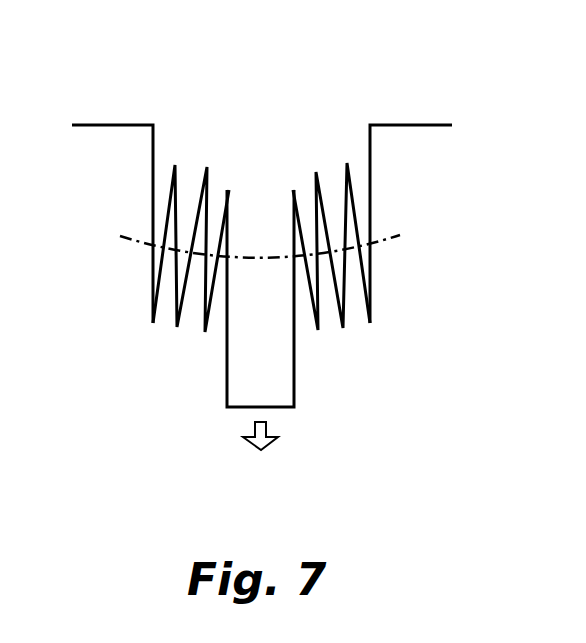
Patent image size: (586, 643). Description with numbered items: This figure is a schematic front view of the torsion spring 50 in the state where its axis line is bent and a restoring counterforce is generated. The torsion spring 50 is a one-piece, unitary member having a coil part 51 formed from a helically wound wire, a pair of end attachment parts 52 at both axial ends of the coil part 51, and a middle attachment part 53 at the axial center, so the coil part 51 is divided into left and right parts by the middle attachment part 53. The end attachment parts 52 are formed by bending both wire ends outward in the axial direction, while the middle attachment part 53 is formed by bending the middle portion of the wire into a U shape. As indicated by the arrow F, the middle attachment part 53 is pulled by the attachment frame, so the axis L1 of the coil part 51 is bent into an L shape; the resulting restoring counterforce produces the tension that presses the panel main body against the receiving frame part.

The torsion spring 50 is at (175, 388).
The coil part 51 is at (316, 172).
The end attachment parts 52 is at (94, 124).
The middle attachment part 53 is at (296, 388).
The axis L1 is at (122, 238).
The arrow F is at (260, 455).